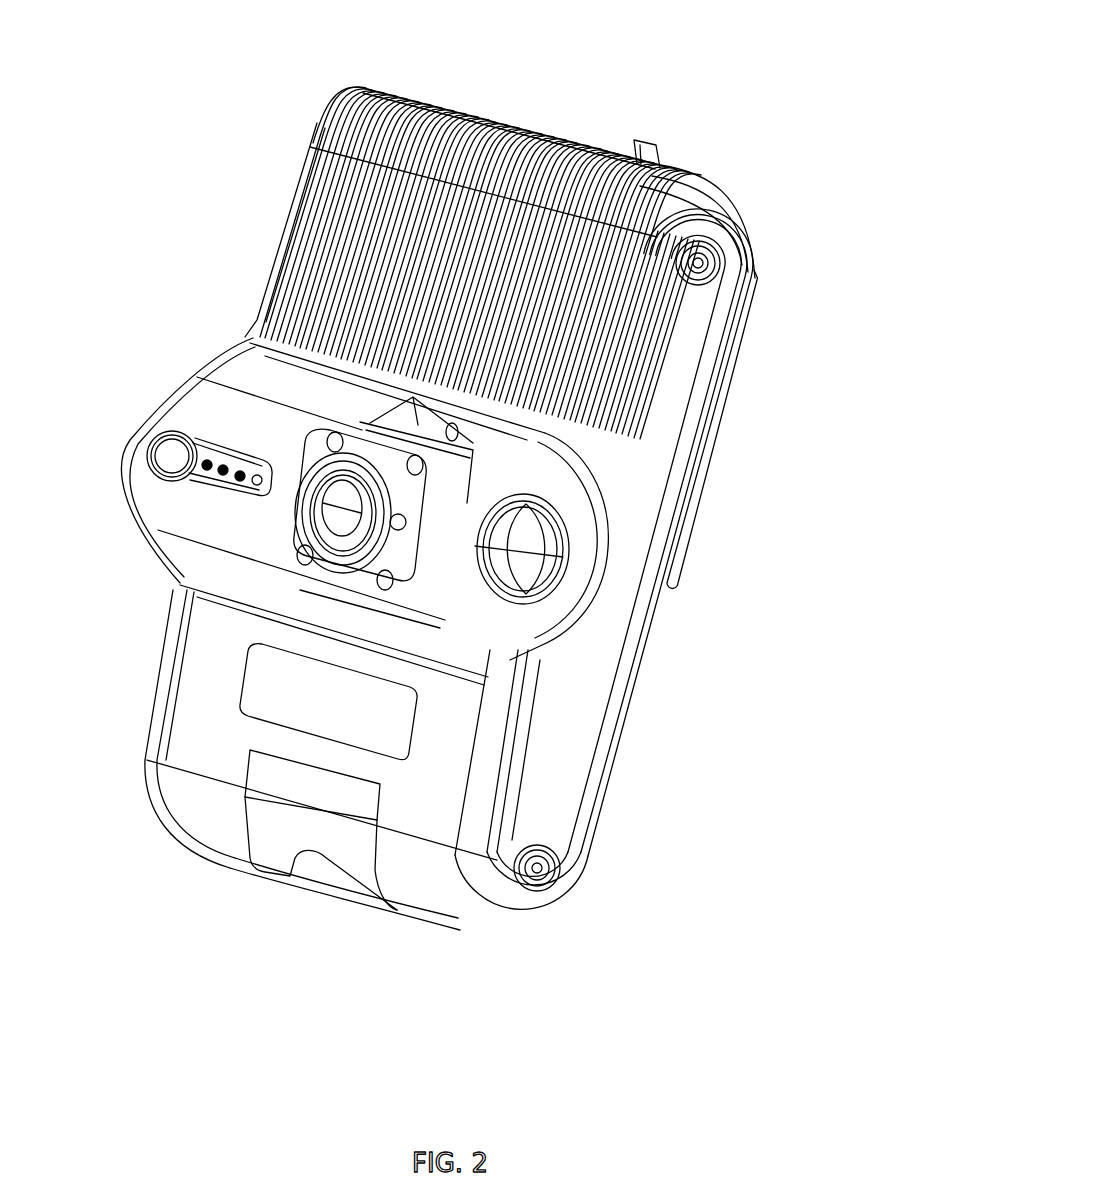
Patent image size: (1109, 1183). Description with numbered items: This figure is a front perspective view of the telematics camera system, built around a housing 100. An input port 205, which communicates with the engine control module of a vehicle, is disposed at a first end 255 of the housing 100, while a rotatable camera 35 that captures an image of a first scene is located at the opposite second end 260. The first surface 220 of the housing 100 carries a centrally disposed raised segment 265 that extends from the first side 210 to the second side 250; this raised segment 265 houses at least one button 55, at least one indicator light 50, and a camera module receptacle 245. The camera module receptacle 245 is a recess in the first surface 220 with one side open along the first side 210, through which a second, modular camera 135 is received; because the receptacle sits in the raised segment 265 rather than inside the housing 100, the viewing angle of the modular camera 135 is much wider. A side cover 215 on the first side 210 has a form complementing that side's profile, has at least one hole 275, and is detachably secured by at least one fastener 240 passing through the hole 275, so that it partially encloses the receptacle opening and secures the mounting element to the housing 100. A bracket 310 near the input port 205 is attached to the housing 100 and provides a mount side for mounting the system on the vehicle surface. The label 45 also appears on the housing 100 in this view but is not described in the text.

The housing 100 is at (868, 67).
The first end 255 is at (467, 108).
The heat sink fins 45 is at (330, 225).
The input port 205 is at (641, 136).
The fastener 240 is at (712, 262).
The hole 275 is at (710, 278).
The bracket 310 is at (752, 350).
The camera module receptacle 245 is at (487, 437).
The side cover 215 is at (672, 470).
The first side 210 is at (612, 528).
The raised segment 265 is at (230, 420).
The button 55 is at (165, 456).
The indicator light 50 is at (223, 474).
The modular camera 135 is at (500, 590).
The second side 250 is at (150, 705).
The first surface 220 is at (212, 765).
The rotatable camera 35 is at (322, 870).
The second end 260 is at (445, 928).